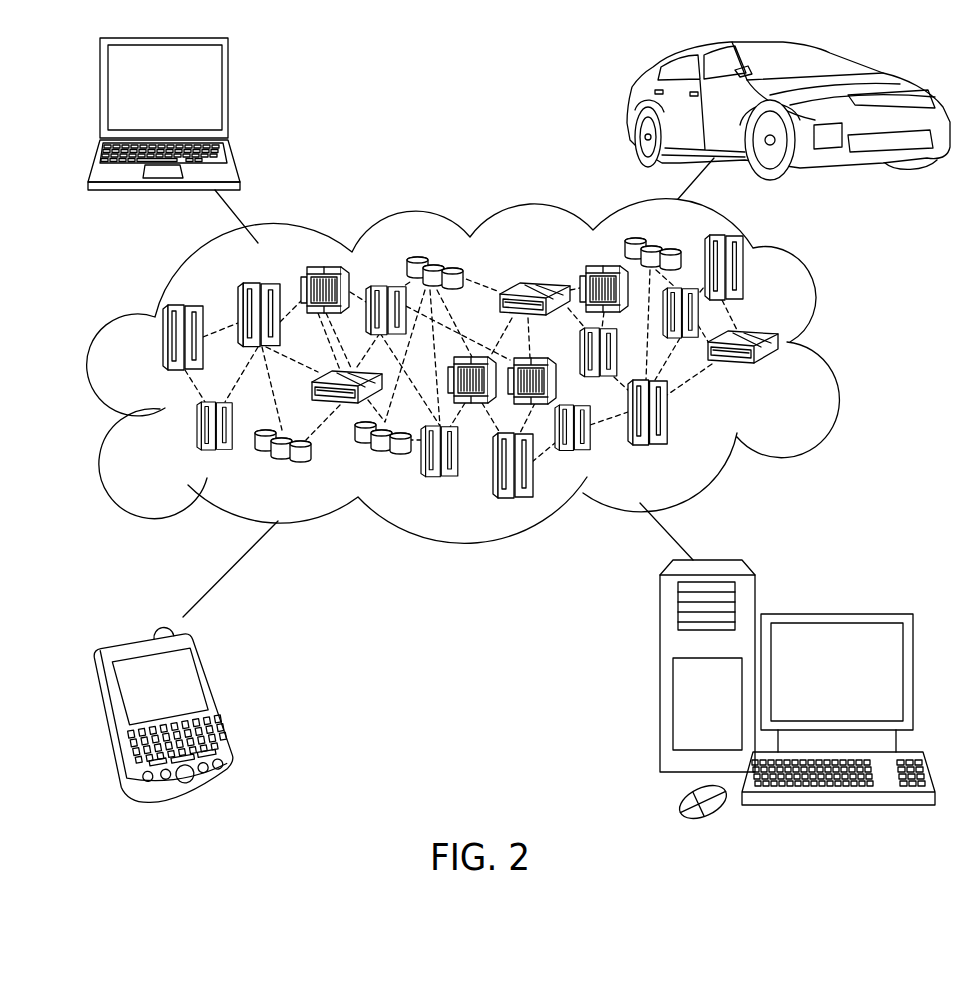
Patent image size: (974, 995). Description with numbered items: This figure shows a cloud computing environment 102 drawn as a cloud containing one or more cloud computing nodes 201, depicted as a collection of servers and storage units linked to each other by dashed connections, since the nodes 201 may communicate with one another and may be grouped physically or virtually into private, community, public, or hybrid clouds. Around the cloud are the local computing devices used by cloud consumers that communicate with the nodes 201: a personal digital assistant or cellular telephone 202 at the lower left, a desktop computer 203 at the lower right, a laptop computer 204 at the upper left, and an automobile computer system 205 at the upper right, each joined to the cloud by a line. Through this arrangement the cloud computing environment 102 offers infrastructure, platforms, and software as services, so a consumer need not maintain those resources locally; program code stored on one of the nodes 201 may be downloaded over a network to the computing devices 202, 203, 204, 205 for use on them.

The cloud computing environment 102 is at (843, 345).
The cloud computing nodes 201 is at (790, 382).
The personal digital assistant (PDA) or cellular telephone 202 is at (218, 699).
The desktop computer 203 is at (835, 613).
The laptop computer 204 is at (227, 93).
The automobile computer system 205 is at (628, 108).